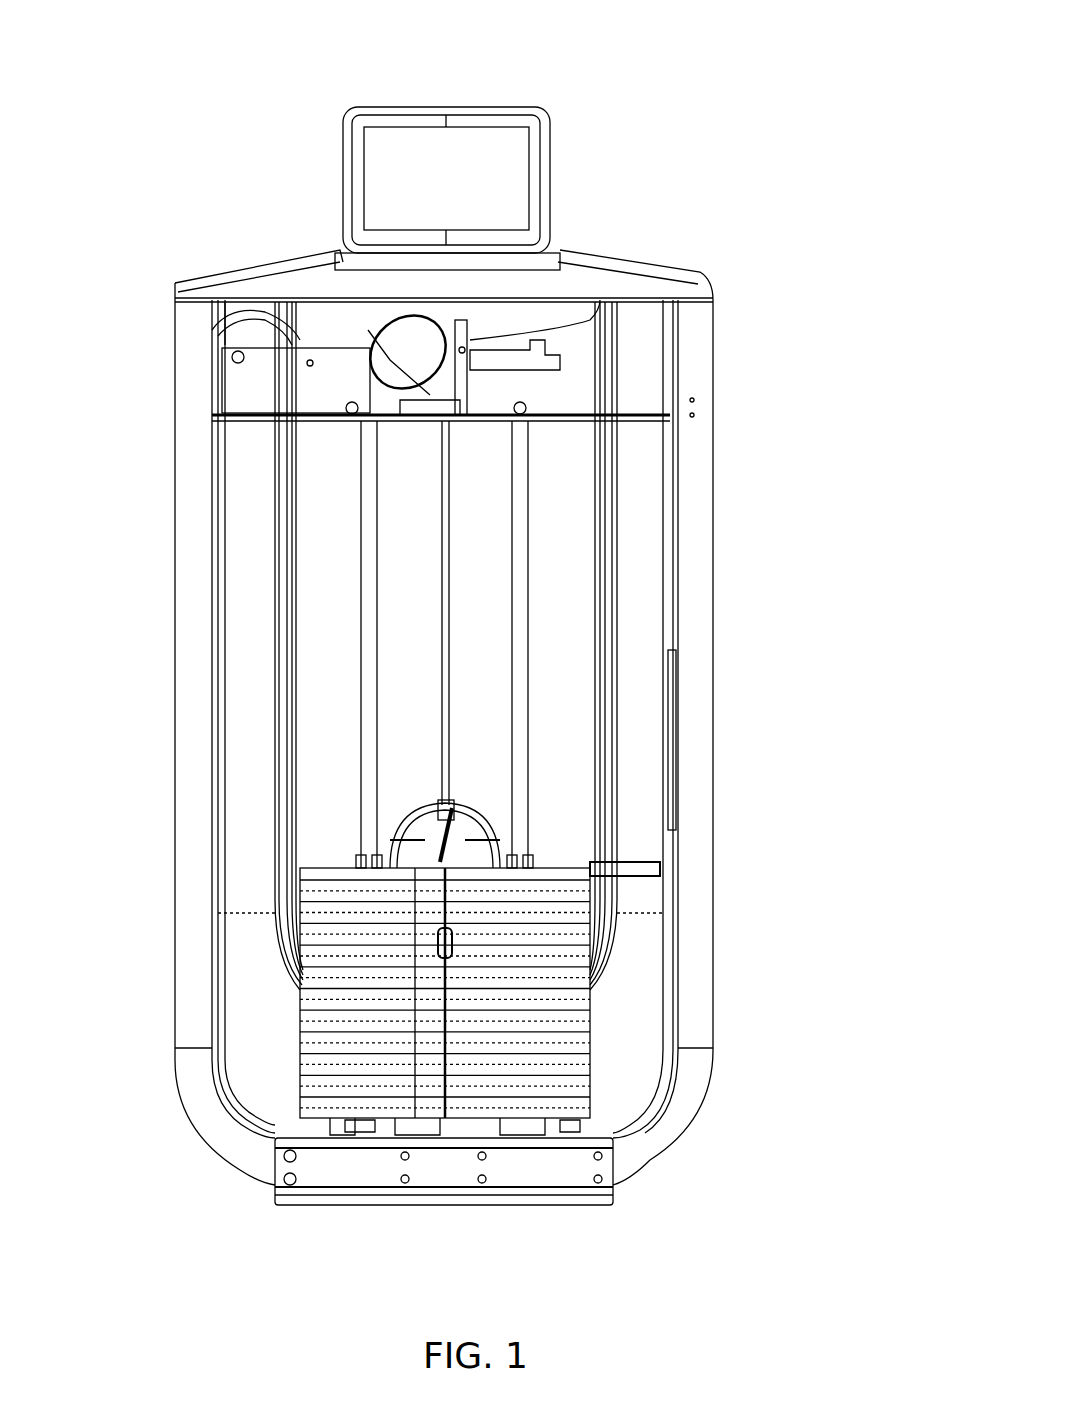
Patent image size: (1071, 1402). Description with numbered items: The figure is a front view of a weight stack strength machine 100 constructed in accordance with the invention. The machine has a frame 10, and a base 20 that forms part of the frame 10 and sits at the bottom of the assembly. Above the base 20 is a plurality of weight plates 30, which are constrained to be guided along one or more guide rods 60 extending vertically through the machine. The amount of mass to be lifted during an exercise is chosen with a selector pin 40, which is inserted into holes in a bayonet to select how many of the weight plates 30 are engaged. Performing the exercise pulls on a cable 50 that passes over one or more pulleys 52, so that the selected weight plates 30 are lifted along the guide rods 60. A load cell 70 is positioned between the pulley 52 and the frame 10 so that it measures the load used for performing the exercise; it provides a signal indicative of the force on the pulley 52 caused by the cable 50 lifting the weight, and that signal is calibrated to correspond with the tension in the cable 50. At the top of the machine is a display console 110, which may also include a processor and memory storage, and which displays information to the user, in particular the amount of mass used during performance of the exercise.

The frame 10 is at (188, 560).
The base 20 is at (555, 1165).
The weight plates 30 is at (587, 1035).
The selector pin 40 is at (450, 938).
The cable 50 is at (452, 710).
The pulley 52 is at (243, 320).
The guide rods 60 is at (372, 580).
The load cell 70 is at (440, 338).
The weight stack strength machine 100 is at (632, 220).
The display console 110 is at (475, 167).